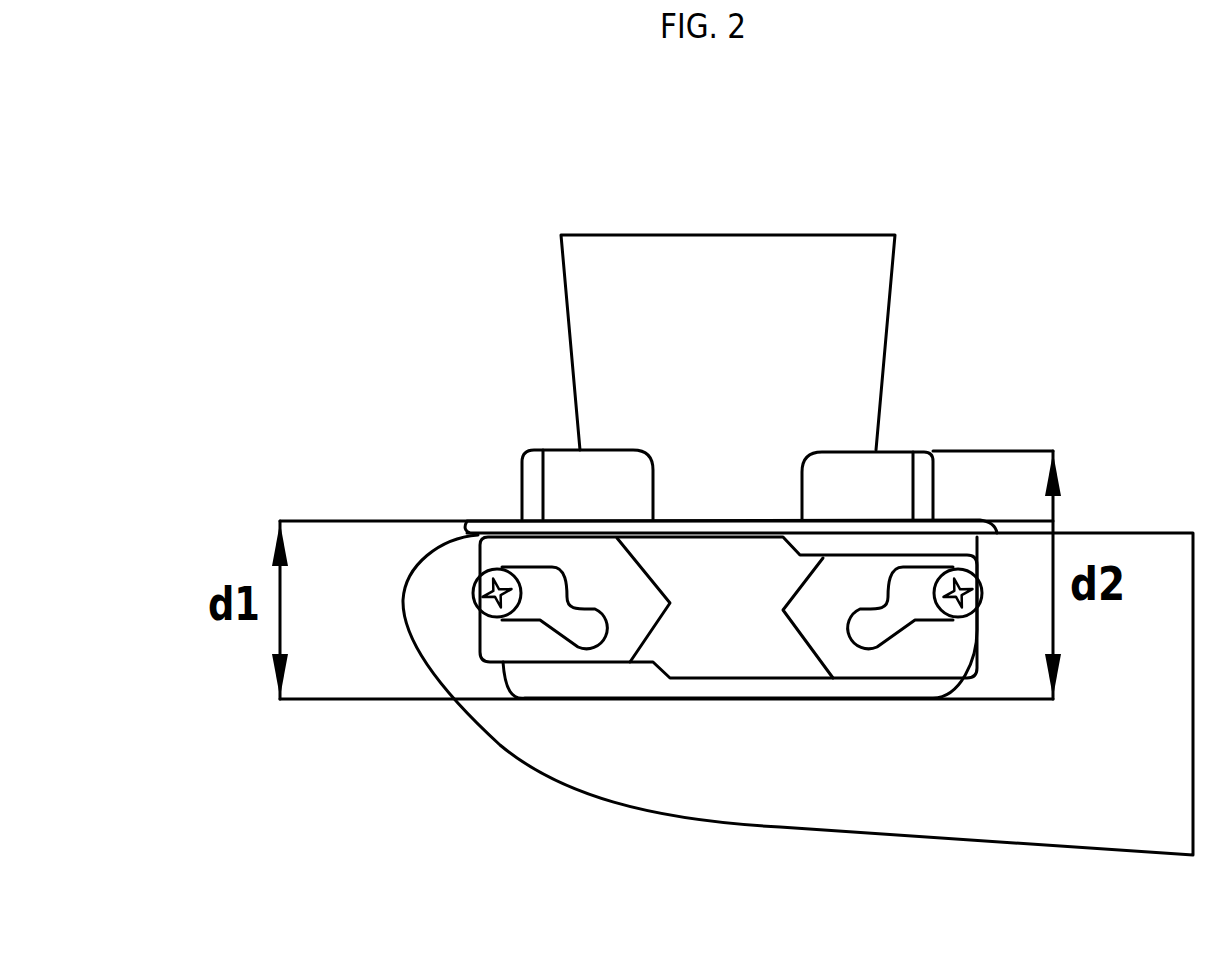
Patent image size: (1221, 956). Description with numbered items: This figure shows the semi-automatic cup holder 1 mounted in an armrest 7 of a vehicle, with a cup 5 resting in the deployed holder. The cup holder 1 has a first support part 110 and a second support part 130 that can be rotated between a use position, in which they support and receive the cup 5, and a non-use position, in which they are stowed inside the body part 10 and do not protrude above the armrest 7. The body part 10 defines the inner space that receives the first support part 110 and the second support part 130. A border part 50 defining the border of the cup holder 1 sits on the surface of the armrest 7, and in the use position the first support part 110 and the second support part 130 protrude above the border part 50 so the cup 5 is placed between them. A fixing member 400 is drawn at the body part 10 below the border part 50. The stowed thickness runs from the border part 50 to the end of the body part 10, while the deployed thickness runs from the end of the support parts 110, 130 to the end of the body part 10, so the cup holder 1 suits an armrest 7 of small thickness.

The semi-automatic cup holder 1 is at (478, 478).
The cup 5 is at (845, 208).
The armrest 7 is at (1130, 552).
The body part 10 is at (528, 683).
The border part 50 is at (465, 522).
The first support part 110 is at (558, 465).
The second support part 130 is at (891, 477).
The fixing bracket 400 is at (498, 645).